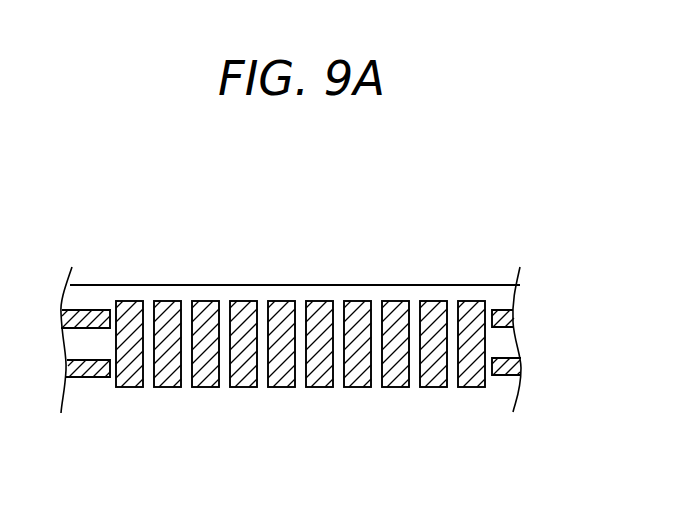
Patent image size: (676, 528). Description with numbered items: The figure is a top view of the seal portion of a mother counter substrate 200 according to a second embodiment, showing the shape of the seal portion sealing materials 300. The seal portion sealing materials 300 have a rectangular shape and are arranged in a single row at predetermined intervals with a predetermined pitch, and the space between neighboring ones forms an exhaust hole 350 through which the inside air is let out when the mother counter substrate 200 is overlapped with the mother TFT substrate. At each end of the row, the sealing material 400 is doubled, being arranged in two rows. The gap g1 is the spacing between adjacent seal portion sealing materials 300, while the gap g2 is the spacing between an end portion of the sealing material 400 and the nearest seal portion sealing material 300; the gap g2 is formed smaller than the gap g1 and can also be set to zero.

The mother counter substrate 200 is at (402, 284).
The seal portion sealing material 300 is at (322, 302).
The exhaust hole 350 is at (300, 304).
The sealing material 400 is at (498, 307).
The gap between seal portion sealing materials g1 is at (155, 300).
The gap between sealing material end portion and seal portion sealing material g2 is at (116, 300).